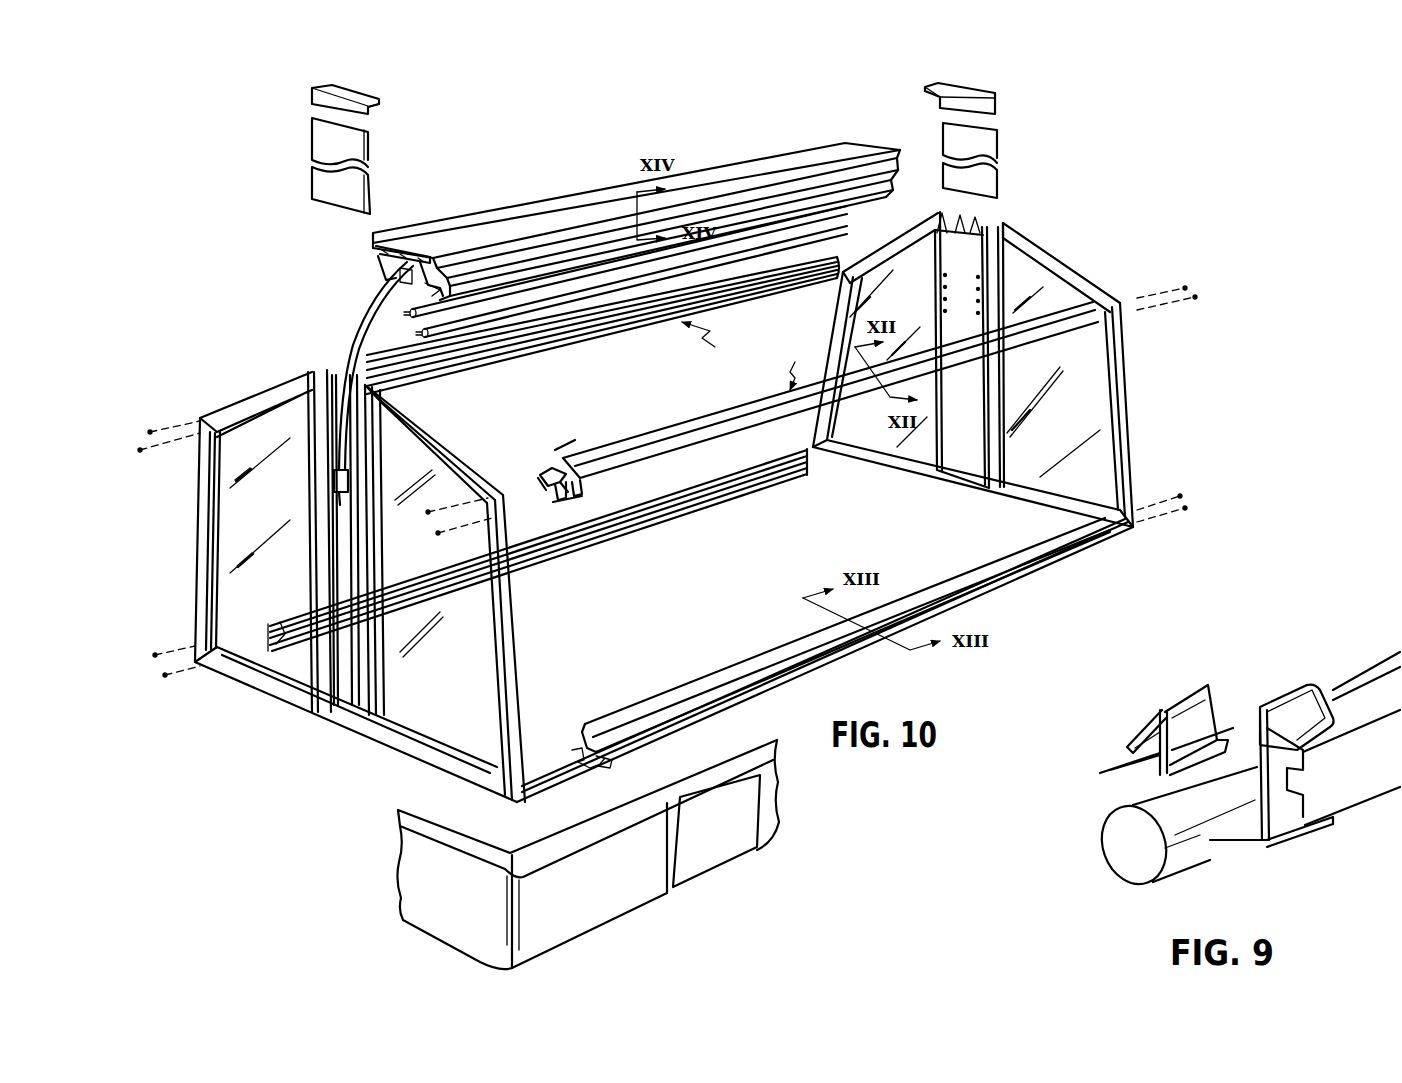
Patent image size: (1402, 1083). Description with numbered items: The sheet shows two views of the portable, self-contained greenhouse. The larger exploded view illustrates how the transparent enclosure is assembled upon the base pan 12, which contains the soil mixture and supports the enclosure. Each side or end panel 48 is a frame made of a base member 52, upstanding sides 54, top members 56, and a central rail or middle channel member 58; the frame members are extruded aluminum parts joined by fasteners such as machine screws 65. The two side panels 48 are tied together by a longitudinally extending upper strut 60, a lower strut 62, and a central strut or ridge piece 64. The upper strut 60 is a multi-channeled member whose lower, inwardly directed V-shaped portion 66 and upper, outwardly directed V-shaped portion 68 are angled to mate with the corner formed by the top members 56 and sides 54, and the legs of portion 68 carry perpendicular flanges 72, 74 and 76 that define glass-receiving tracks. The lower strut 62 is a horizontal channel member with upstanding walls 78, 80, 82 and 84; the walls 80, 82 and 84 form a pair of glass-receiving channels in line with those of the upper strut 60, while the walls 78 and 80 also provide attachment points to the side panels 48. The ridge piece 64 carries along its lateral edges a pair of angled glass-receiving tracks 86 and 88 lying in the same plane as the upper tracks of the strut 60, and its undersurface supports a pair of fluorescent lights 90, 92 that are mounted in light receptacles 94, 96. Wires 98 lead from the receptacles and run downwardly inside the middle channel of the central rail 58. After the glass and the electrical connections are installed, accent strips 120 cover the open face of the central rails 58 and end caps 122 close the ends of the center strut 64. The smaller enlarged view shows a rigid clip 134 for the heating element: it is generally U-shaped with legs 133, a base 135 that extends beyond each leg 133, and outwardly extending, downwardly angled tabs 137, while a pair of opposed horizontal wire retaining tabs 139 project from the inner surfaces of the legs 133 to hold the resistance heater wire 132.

In FIG. 10, the base pan 12 is at (655, 905).
In FIG. 10, the side or end panel 48 is at (198, 501).
In FIG. 10, the base member 52 is at (360, 738).
In FIG. 10, the upstanding sides 54 is at (195, 565).
In FIG. 10, the top members 56 is at (270, 390).
In FIG. 10, the central rail or middle channel member 58 is at (308, 572).
In FIG. 10, the upper strut 60 is at (746, 356).
In FIG. 10, the lower strut 62 is at (785, 482).
In FIG. 10, the central strut or ridge piece 64 is at (740, 162).
In FIG. 10, the machine screws 65 is at (436, 528).
In FIG. 10, the lower, inwardly directed, V-shaped portion 66 is at (545, 470).
In FIG. 10, the upper, outwardly directed, V-shaped portion 68 is at (664, 425).
In FIG. 10, the flange 72 is at (606, 452).
In FIG. 10, the flange 74 is at (590, 488).
In FIG. 10, the flange 76 is at (565, 470).
In FIG. 10, the upstanding wall 78 is at (572, 755).
In FIG. 10, the upstanding wall 80 is at (587, 730).
In FIG. 10, the upstanding wall 82 is at (590, 768).
In FIG. 10, the upstanding wall 84 is at (604, 764).
In FIG. 10, the angled glass-receiving track 86 is at (372, 236).
In FIG. 10, the angled glass-receiving track 88 is at (378, 254).
In FIG. 10, the fluorescent light 90 is at (555, 300).
In FIG. 10, the fluorescent light 92 is at (462, 300).
In FIG. 10, the light receptacle 94 is at (398, 276).
In FIG. 10, the light receptacle 96 is at (428, 290).
In FIG. 10, the wires 98 is at (352, 324).
In FIG. 10, the accent strips 120 is at (318, 140).
In FIG. 10, the end caps 122 is at (310, 94).
In FIG. 9, the resistance heater wire 132 is at (1373, 660).
In FIG. 9, the legs 133 is at (1257, 710).
In FIG. 9, the rigid clips 134 is at (1173, 690).
In FIG. 9, the base 135 is at (1243, 845).
In FIG. 9, the outwardly extending downwardly angled tabs 137 is at (1140, 753).
In FIG. 9, the horizontal wire retaining tabs 139 is at (1148, 790).